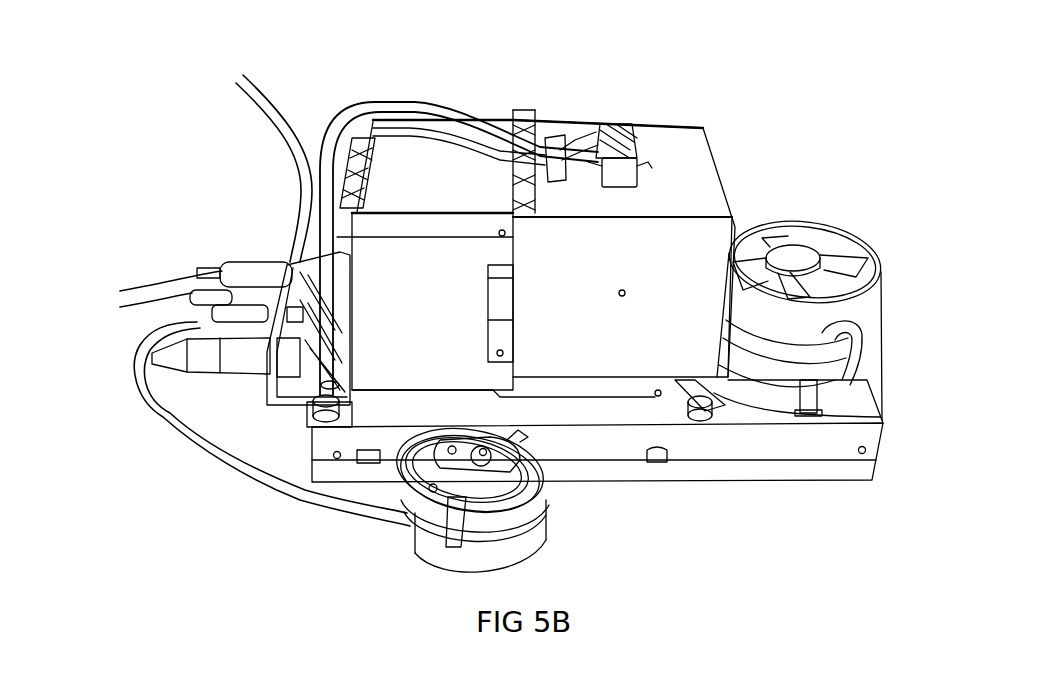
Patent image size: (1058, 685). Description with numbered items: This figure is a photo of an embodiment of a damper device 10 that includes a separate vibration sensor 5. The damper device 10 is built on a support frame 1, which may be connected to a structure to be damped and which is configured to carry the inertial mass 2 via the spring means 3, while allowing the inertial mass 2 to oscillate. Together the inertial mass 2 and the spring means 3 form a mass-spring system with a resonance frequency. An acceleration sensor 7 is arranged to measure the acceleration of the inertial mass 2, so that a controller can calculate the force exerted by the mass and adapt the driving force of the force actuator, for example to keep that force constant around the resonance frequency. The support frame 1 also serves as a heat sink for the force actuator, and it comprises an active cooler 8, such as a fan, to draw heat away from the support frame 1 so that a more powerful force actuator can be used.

The damper device 10 is at (343, 110).
The support frame 1 is at (345, 278).
The inertial mass 2 is at (685, 177).
The spring means 3 is at (434, 172).
The vibration sensor 5 is at (406, 543).
The acceleration sensor 7 is at (621, 130).
The active cooler 8 is at (799, 233).